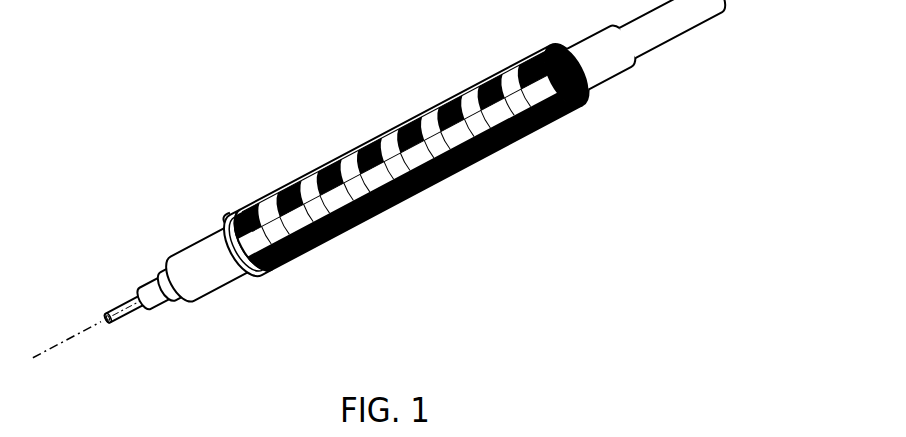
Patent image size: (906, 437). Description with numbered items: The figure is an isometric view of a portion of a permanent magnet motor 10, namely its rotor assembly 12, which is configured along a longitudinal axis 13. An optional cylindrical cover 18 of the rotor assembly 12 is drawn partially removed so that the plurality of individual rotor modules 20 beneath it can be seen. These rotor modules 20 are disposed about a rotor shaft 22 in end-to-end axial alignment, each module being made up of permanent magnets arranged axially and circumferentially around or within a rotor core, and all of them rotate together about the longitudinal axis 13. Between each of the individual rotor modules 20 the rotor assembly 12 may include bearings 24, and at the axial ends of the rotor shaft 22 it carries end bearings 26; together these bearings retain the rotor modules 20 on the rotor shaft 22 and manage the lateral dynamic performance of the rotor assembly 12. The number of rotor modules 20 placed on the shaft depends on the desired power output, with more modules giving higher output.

The permanent magnet motor 10 is at (372, 190).
The rotor assembly 12 is at (396, 138).
The longitudinal axis 13 is at (72, 332).
The cylindrical cover 18 is at (588, 97).
The rotor modules 20 is at (485, 71).
The rotor shaft 22 is at (668, 22).
The bearings 24 is at (402, 132).
The end bearings 26 is at (231, 218).